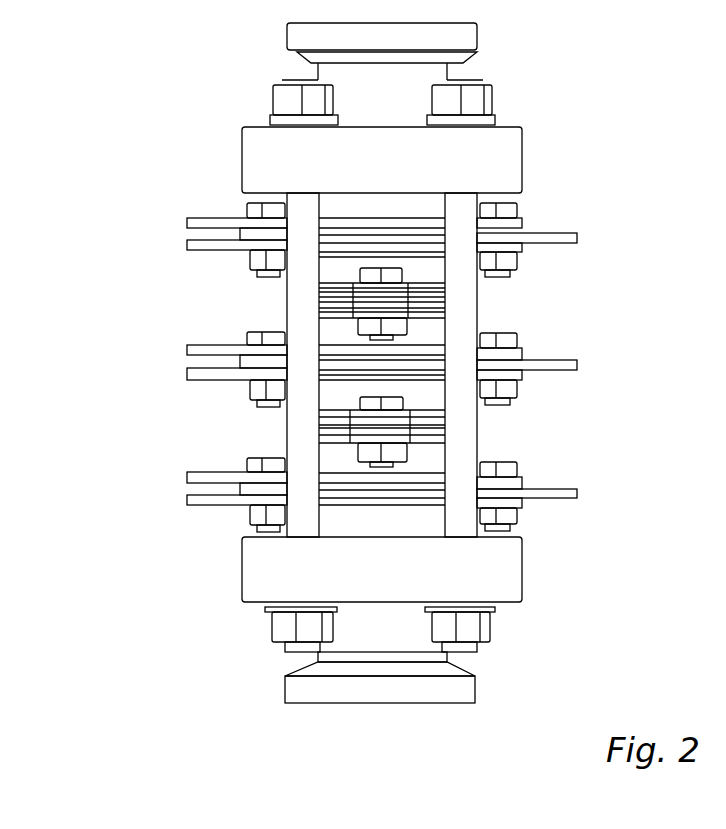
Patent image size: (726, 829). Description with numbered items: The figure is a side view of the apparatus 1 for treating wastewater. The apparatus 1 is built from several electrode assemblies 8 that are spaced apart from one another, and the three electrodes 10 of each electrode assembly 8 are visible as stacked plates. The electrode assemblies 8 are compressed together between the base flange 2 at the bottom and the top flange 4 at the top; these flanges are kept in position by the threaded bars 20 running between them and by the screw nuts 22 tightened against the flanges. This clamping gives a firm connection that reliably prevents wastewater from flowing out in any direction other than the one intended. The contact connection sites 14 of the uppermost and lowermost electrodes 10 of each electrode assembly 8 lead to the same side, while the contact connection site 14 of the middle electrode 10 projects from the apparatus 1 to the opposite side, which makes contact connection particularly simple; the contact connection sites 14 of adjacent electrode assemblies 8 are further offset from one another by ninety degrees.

The apparatus 1 is at (621, 154).
The base flange 2 is at (437, 677).
The top flange 4 is at (425, 77).
The electrode assembly 8 is at (243, 421).
The electrode 10 is at (440, 440).
The contact connection site 14 is at (207, 225).
The threaded bar 20 is at (462, 290).
The screw nut 22 is at (288, 98).